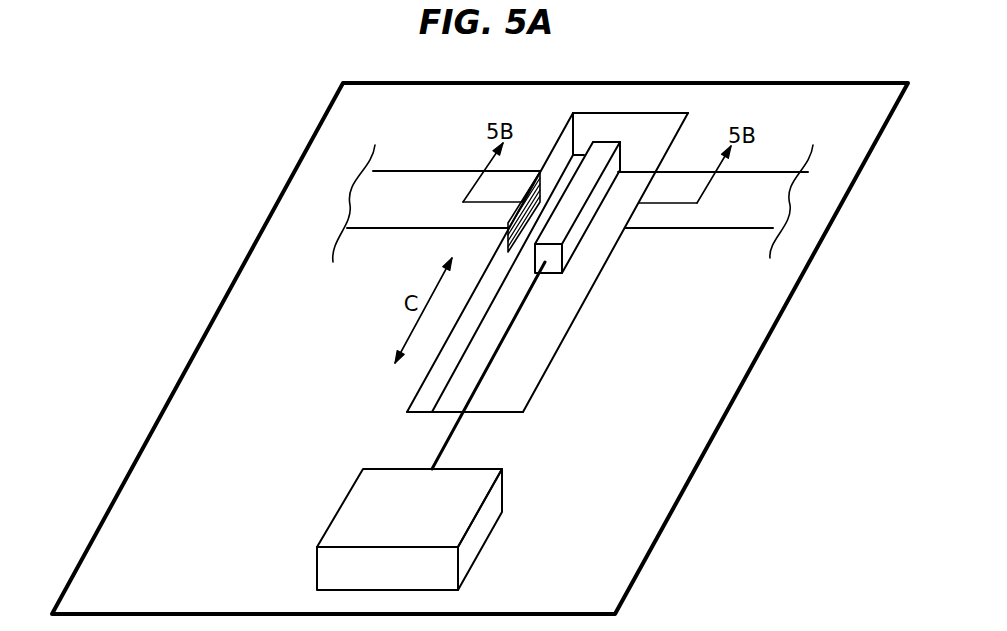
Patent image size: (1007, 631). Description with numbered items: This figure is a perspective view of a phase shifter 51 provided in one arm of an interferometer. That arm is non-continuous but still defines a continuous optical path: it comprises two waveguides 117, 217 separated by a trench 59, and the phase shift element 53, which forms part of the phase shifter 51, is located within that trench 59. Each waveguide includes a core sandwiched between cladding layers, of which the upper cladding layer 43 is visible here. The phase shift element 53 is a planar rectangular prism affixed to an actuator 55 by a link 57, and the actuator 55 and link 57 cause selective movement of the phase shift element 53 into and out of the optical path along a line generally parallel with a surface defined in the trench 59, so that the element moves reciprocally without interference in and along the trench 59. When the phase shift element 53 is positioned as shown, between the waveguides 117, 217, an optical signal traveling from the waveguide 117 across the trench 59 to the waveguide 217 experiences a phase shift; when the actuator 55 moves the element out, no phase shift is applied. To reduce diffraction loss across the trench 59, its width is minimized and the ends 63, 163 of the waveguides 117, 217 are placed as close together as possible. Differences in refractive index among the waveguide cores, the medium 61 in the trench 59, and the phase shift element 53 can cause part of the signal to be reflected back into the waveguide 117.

The upper cladding layer 43 is at (770, 211).
The phase shifter 51 is at (385, 432).
The phase shift element 53 is at (600, 188).
The actuator 55 is at (477, 525).
The link 57 is at (455, 437).
The trench 59 is at (538, 385).
The medium 61 is at (520, 337).
The end of waveguide 63 is at (514, 213).
The waveguide 117 is at (372, 228).
The end of waveguide 163 is at (648, 177).
The waveguide 217 is at (718, 230).